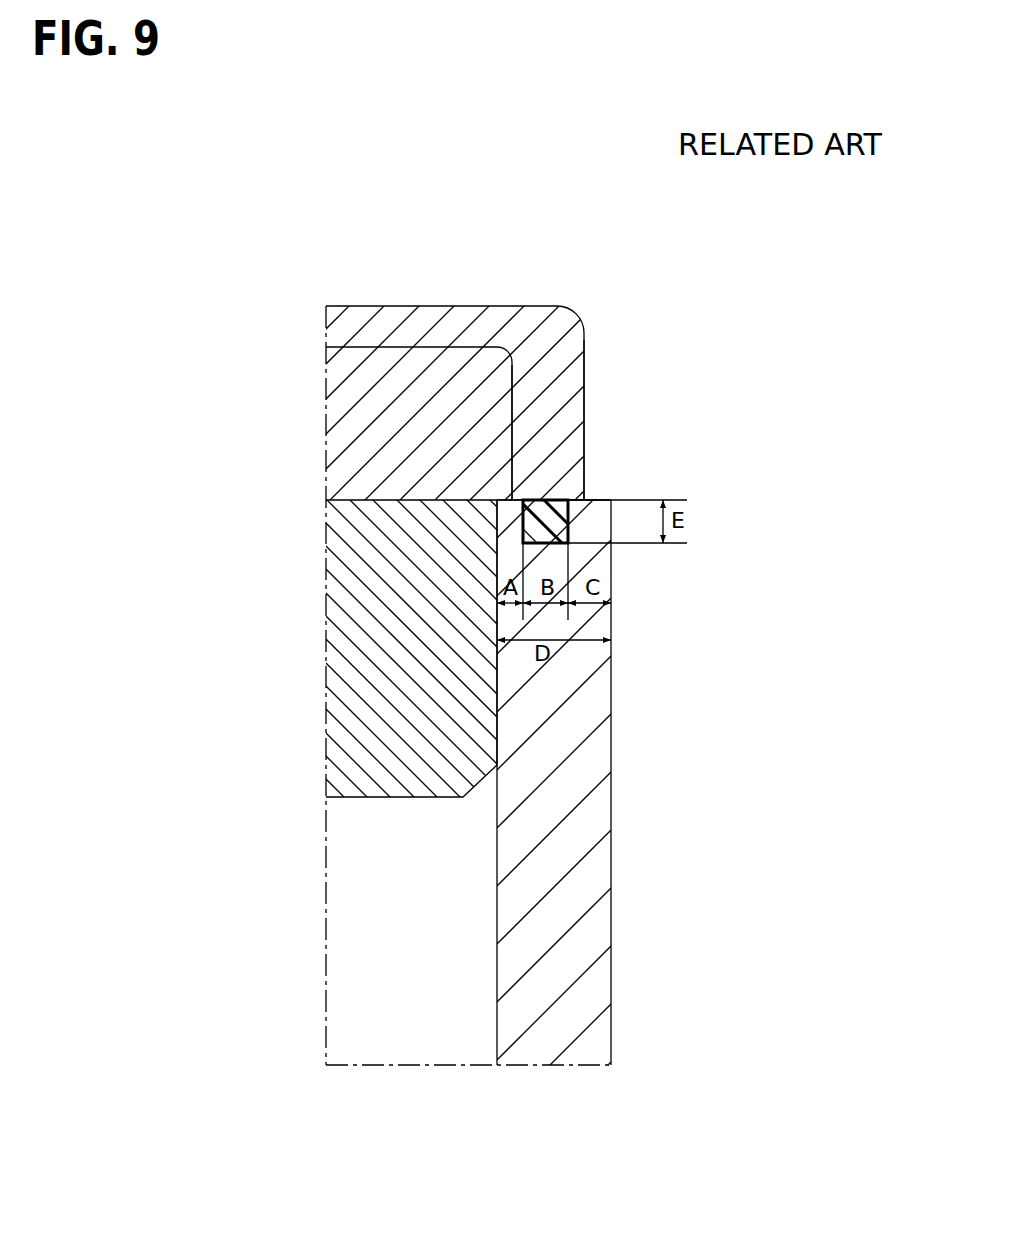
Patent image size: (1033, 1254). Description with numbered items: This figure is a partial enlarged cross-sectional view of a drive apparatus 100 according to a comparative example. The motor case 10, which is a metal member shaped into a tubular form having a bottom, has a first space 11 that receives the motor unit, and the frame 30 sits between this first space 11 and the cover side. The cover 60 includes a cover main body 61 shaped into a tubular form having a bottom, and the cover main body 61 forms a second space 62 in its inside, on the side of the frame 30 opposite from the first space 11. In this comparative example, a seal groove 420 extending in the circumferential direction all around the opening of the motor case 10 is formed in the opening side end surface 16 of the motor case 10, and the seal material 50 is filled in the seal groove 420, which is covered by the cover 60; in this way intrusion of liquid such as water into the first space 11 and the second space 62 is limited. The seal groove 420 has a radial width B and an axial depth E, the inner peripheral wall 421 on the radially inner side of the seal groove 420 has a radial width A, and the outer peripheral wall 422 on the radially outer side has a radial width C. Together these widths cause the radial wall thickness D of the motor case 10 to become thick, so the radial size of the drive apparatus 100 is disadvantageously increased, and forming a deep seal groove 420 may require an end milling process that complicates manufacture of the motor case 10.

The drive apparatus 100 is at (264, 274).
The cover 60 is at (421, 303).
The cover main body 61 is at (563, 360).
The second space 62 is at (438, 433).
The motor case 10 is at (575, 890).
The first space 11 is at (447, 943).
The frame 30 is at (385, 688).
The seal material 50 is at (547, 500).
The opening side end surface 16 is at (571, 500).
The seal groove 420 is at (597, 500).
The inner peripheral wall 421 is at (515, 527).
The outer peripheral wall 422 is at (590, 524).